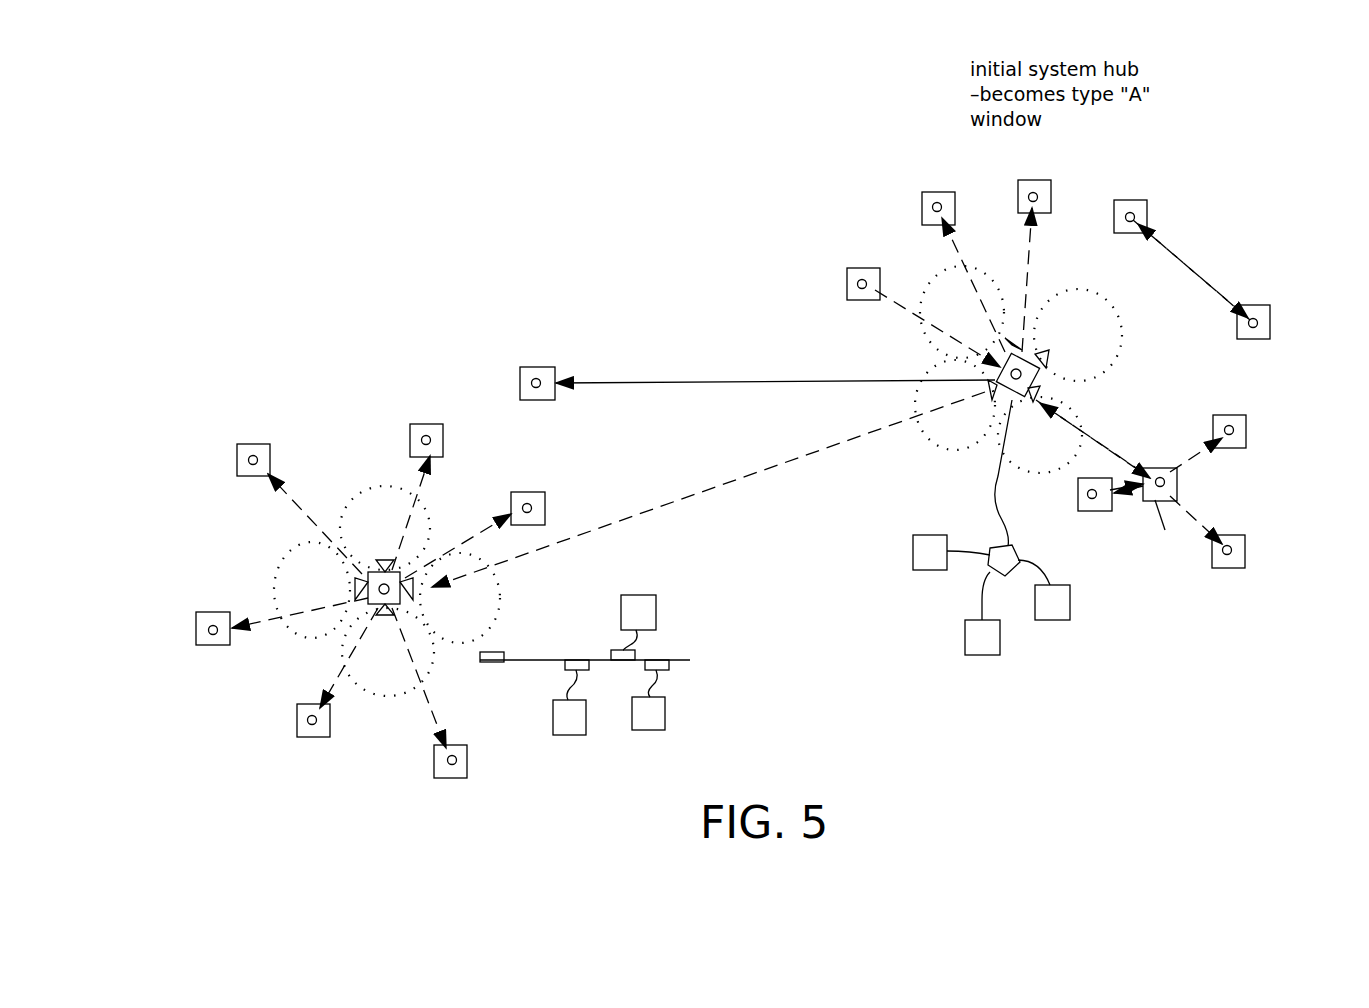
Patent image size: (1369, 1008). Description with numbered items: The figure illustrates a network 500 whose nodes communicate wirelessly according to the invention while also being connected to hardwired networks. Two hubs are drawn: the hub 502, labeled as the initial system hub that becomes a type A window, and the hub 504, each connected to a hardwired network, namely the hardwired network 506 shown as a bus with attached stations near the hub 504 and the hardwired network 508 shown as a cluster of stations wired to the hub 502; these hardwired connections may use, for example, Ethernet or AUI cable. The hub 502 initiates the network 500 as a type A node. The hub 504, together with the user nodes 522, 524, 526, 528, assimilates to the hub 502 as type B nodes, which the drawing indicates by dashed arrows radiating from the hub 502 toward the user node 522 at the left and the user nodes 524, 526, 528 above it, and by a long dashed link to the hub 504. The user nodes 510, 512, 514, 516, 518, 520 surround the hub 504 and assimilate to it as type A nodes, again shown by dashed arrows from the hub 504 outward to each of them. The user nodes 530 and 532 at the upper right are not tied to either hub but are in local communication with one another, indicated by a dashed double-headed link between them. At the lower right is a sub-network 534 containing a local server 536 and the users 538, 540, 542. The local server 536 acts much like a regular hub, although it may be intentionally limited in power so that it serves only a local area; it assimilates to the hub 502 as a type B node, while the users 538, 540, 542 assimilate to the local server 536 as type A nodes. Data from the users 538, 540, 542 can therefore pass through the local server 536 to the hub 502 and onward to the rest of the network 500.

The network 500 is at (1135, 715).
The hub 502 is at (1150, 350).
The hub 504 is at (205, 564).
The hardwired network 506 is at (520, 662).
The hardwired network 508 is at (1016, 550).
The user node 510 is at (434, 768).
The user node 512 is at (297, 720).
The user node 514 is at (196, 628).
The user node 516 is at (237, 456).
The user node 518 is at (443, 440).
The user node 520 is at (545, 508).
The user node 522 is at (555, 380).
The user node 524 is at (847, 275).
The user node 526 is at (922, 206).
The user node 528 is at (1051, 200).
The user node 530 is at (1135, 200).
The user node 532 is at (1270, 323).
The sub-network 534 is at (1260, 500).
The local server 536 is at (1168, 502).
The user 538 is at (1230, 568).
The user 540 is at (1246, 422).
The user 542 is at (1098, 511).